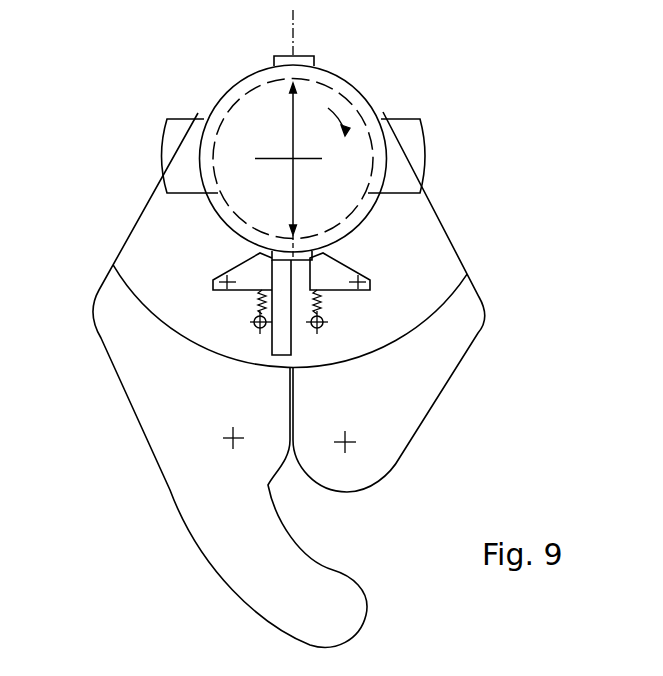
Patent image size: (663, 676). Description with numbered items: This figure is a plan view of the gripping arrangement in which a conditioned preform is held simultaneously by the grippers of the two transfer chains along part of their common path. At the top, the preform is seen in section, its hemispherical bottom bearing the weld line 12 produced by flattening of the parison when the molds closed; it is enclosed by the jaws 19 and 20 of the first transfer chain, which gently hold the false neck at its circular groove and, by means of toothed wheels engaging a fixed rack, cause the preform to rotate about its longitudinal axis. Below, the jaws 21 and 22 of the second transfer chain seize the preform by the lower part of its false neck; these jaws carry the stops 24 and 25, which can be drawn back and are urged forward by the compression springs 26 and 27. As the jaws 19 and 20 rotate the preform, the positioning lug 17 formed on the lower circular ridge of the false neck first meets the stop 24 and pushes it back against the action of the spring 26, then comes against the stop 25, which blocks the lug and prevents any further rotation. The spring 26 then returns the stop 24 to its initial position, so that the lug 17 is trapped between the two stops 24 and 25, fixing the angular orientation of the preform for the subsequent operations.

The weld line 12 is at (294, 110).
The positioning lug 17 is at (272, 355).
The jaw 19 is at (170, 133).
The jaw 20 is at (415, 136).
The jaw 21 is at (185, 453).
The jaw 22 is at (375, 455).
The stop 24 is at (327, 264).
The stop 25 is at (253, 263).
The compression spring 26 is at (326, 309).
The compression spring 27 is at (252, 309).